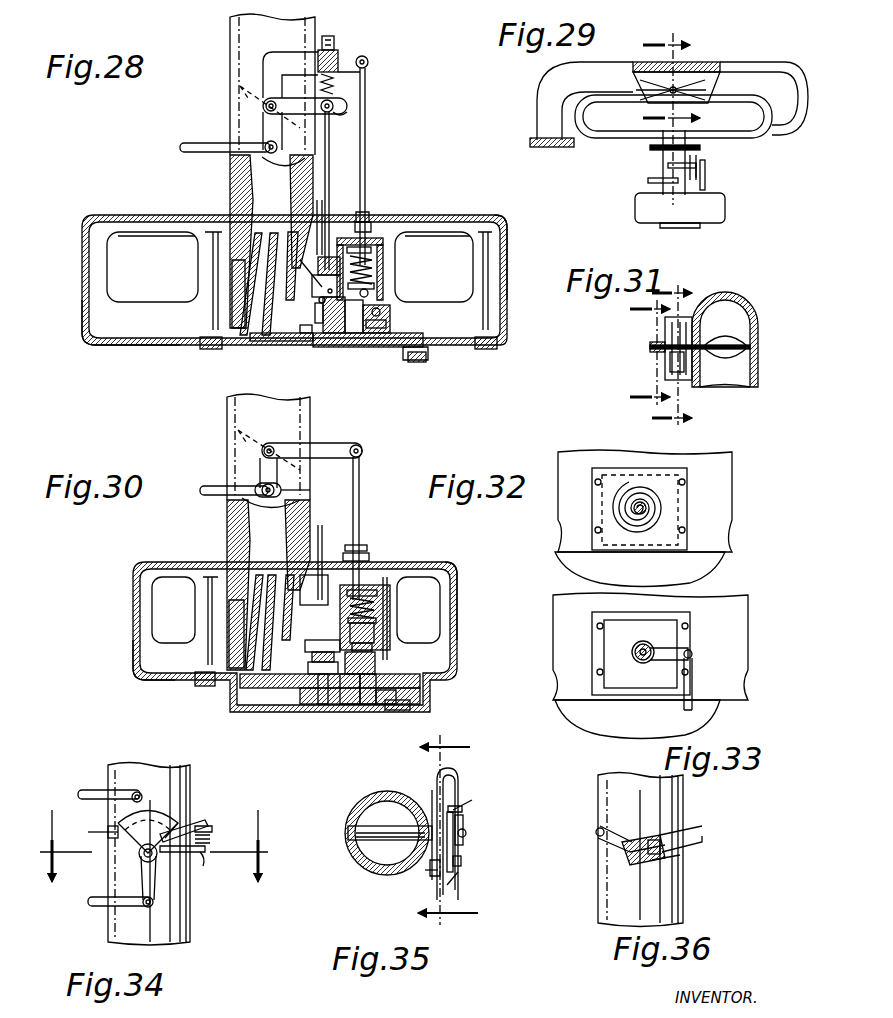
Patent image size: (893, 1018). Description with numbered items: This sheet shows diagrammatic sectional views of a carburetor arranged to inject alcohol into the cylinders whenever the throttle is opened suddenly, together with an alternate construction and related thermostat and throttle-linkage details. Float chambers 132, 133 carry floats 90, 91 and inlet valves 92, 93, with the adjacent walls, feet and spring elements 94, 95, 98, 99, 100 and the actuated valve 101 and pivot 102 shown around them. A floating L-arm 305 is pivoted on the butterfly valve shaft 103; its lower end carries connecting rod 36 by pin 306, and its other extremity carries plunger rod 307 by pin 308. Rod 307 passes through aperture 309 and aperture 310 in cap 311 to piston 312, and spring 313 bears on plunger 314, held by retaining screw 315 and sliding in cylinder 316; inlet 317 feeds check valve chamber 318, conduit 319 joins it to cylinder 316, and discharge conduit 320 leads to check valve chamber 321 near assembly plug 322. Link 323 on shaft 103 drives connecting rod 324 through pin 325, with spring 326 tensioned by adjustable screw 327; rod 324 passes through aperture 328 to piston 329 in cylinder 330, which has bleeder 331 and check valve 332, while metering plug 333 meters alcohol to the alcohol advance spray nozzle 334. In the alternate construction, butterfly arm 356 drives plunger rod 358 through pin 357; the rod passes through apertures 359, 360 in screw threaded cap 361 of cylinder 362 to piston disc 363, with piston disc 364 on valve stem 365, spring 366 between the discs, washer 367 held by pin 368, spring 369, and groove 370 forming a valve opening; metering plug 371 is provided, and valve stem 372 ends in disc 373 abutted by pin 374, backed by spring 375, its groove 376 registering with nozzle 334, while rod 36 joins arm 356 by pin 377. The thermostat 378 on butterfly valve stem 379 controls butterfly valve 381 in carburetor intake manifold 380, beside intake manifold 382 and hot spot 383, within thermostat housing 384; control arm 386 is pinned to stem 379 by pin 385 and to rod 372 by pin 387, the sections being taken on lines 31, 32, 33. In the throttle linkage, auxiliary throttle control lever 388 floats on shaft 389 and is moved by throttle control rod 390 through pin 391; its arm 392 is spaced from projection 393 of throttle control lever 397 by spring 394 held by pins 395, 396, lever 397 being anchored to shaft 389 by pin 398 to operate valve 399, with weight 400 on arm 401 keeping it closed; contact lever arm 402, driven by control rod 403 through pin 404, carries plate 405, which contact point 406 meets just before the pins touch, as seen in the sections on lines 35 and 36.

In FIG. 29, the section line 31— 31 is at (687, 81).
In FIG. 31, the section line 32— 32 is at (685, 357).
In FIG. 31, the section line 33— 33 is at (636, 352).
In FIG. 34, the section line 35— 35 is at (150, 861).
In FIG. 28, the connecting rod 36 is at (200, 153).
In FIG. 29, the connecting rod 36 is at (668, 166).
In FIG. 30, the connecting rod 36 is at (218, 487).
In FIG. 35, the connecting rod 36 is at (464, 834).
In FIG. 28, the float 90 is at (152, 267).
In FIG. 30, the float 90 is at (173, 610).
In FIG. 28, the float 91 is at (434, 267).
In FIG. 30, the float 91 is at (442, 624).
In FIG. 28, the inlet valve 92 is at (483, 315).
In FIG. 30, the inlet valve 92 is at (388, 660).
In FIG. 28, the inlet valve 93 is at (212, 313).
In FIG. 30, the inlet valve 93 is at (208, 653).
In FIG. 28, the right foot 94 is at (485, 350).
In FIG. 30, the right foot 94 is at (398, 712).
In FIG. 28, the left foot 95 is at (206, 350).
In FIG. 30, the left foot 95 is at (204, 688).
In FIG. 28, the spring prong 98 is at (265, 338).
In FIG. 30, the spring prong 98 is at (265, 675).
In FIG. 28, the spring prong 99 is at (242, 337).
In FIG. 30, the spring prong 99 is at (248, 672).
In FIG. 28, the housing wall 100 is at (232, 200).
In FIG. 30, the housing wall 100 is at (230, 540).
In FIG. 28, the valve 101 is at (232, 218).
In FIG. 30, the valve 101 is at (230, 558).
In FIG. 28, the pivot pin 102 is at (240, 98).
In FIG. 30, the pivot pin 102 is at (240, 440).
In FIG. 28, the butterfly valve shaft 103 is at (265, 108).
In FIG. 30, the butterfly valve shaft 103 is at (262, 446).
In FIG. 28, the float chamber 132 is at (140, 333).
In FIG. 30, the float chamber 132 is at (170, 678).
In FIG. 28, the float chamber 133 is at (503, 243).
In FIG. 30, the float chamber 133 is at (452, 605).
In FIG. 28, the floating L-arm 305 is at (294, 58).
In FIG. 28, the pin 306 is at (264, 145).
In FIG. 28, the plunger rod 307 is at (366, 91).
In FIG. 28, the pin 308 is at (369, 64).
In FIG. 28, the aperture 309 is at (368, 212).
In FIG. 28, the aperture 310 is at (371, 226).
In FIG. 28, the cap 311 is at (390, 238).
In FIG. 28, the piston 312 is at (372, 250).
In FIG. 28, the spring 313 is at (373, 268).
In FIG. 28, the plunger 314 is at (375, 286).
In FIG. 28, the retaining screw 315 is at (368, 293).
In FIG. 28, the cylinder 316 is at (358, 335).
In FIG. 28, the inlet 317 is at (390, 313).
In FIG. 28, the check valve chamber 318 is at (387, 326).
In FIG. 28, the conduit 319 is at (372, 345).
In FIG. 28, the discharge conduit 320 is at (318, 336).
In FIG. 28, the check valve chamber 321 is at (345, 313).
In FIG. 28, the assembly plug 322 is at (286, 342).
In FIG. 28, the link 323 is at (334, 106).
In FIG. 28, the connecting rod 324 is at (329, 150).
In FIG. 28, the pin 325 is at (338, 115).
In FIG. 28, the spring 326 is at (338, 80).
In FIG. 28, the adjustable screw 327 is at (330, 40).
In FIG. 28, the aperture 328 is at (323, 210).
In FIG. 28, the piston 329 is at (312, 283).
In FIG. 28, the cylinder 330 is at (320, 300).
In FIG. 28, the bleeder 331 is at (316, 315).
In FIG. 28, the check valve 332 is at (326, 277).
In FIG. 28, the metering plug 333 is at (420, 362).
In FIG. 28, the alcohol advance spray nozzle 334 is at (283, 212).
In FIG. 30, the alcohol advance spray nozzle 334 is at (284, 550).
In FIG. 29, the butterfly arm 356 is at (705, 166).
In FIG. 30, the butterfly arm 356 is at (330, 443).
In FIG. 30, the pin 357 is at (363, 451).
In FIG. 29, the plunger rod 358 is at (700, 182).
In FIG. 30, the plunger rod 358 is at (360, 498).
In FIG. 30, the aperture 359 is at (368, 548).
In FIG. 30, the aperture 360 is at (370, 557).
In FIG. 30, the screw threaded cap 361 is at (340, 588).
In FIG. 30, the cylinder 362 is at (376, 602).
In FIG. 30, the piston disc 363 is at (378, 592).
In FIG. 30, the piston disc 364 is at (376, 630).
In FIG. 30, the valve stem 365 is at (352, 704).
In FIG. 30, the spring 366 is at (377, 618).
In FIG. 30, the washer 367 is at (376, 657).
In FIG. 30, the pin 368 is at (376, 645).
In FIG. 30, the spring 369 is at (366, 706).
In FIG. 30, the groove 370 is at (386, 706).
In FIG. 30, the metering plug 371 is at (340, 700).
In FIG. 29, the valve stem 372 is at (700, 148).
In FIG. 30, the valve stem 372 is at (323, 540).
In FIG. 33, the valve stem 372 is at (693, 670).
In FIG. 30, the disc 373 is at (312, 654).
In FIG. 30, the pin 374 is at (310, 642).
In FIG. 30, the spring 375 is at (310, 666).
In FIG. 30, the groove 376 is at (304, 704).
In FIG. 29, the pin 377 is at (660, 182).
In FIG. 30, the pin 377 is at (310, 490).
In FIG. 31, the thermostat 378 is at (672, 366).
In FIG. 32, the thermostat 378 is at (662, 504).
In FIG. 29, the butterfly valve stem 379 is at (636, 82).
In FIG. 31, the butterfly valve stem 379 is at (652, 347).
In FIG. 32, the butterfly valve stem 379 is at (632, 508).
In FIG. 33, the butterfly valve stem 379 is at (636, 646).
In FIG. 29, the carburetor intake manifold 380 is at (772, 72).
In FIG. 31, the carburetor intake manifold 380 is at (738, 300).
In FIG. 29, the butterfly valve 381 is at (690, 88).
In FIG. 31, the butterfly valve 381 is at (745, 338).
In FIG. 29, the intake manifold 382 is at (636, 140).
In FIG. 29, the hot spot 383 is at (640, 118).
In FIG. 31, the thermostat housing 384 is at (668, 330).
In FIG. 32, the thermostat housing 384 is at (612, 548).
In FIG. 33, the thermostat housing 384 is at (594, 648).
In FIG. 31, the pin 385 is at (652, 344).
In FIG. 33, the pin 385 is at (642, 660).
In FIG. 33, the control arm 386 is at (686, 646).
In FIG. 33, the pin 387 is at (693, 653).
In FIG. 34, the auxiliary throttle control lever 388 is at (156, 886).
In FIG. 35, the auxiliary throttle control lever 388 is at (462, 810).
In FIG. 34, the shaft 389 is at (140, 856).
In FIG. 35, the shaft 389 is at (348, 832).
In FIG. 36, the shaft 389 is at (626, 856).
In FIG. 34, the throttle control rod 390 is at (100, 906).
In FIG. 34, the pin 391 is at (154, 905).
In FIG. 34, the arm 392 is at (200, 815).
In FIG. 35, the arm 392 is at (455, 782).
In FIG. 34, the projection 393 is at (217, 860).
In FIG. 35, the projection 393 is at (436, 786).
In FIG. 36, the projection 393 is at (695, 848).
In FIG. 34, the spring 394 is at (210, 838).
In FIG. 34, the pin 395 is at (208, 826).
In FIG. 34, the pin 396 is at (205, 849).
In FIG. 36, the pin 396 is at (700, 830).
In FIG. 35, the throttle control lever 397 is at (465, 836).
In FIG. 36, the throttle control lever 397 is at (650, 840).
In FIG. 36, the pin 398 is at (632, 860).
In FIG. 35, the valve 399 is at (362, 850).
In FIG. 36, the valve 399 is at (672, 864).
In FIG. 35, the weight 400 is at (432, 878).
In FIG. 36, the weight 400 is at (600, 830).
In FIG. 35, the arm 401 is at (430, 872).
In FIG. 36, the arm 401 is at (598, 840).
In FIG. 34, the contact lever arm 402 is at (150, 810).
In FIG. 35, the contact lever arm 402 is at (456, 884).
In FIG. 34, the control rod 403 is at (92, 790).
In FIG. 34, the pin 404 is at (140, 766).
In FIG. 34, the plate 405 is at (168, 812).
In FIG. 35, the plate 405 is at (455, 826).
In FIG. 34, the contact point 406 is at (110, 828).
In FIG. 35, the contact point 406 is at (461, 862).